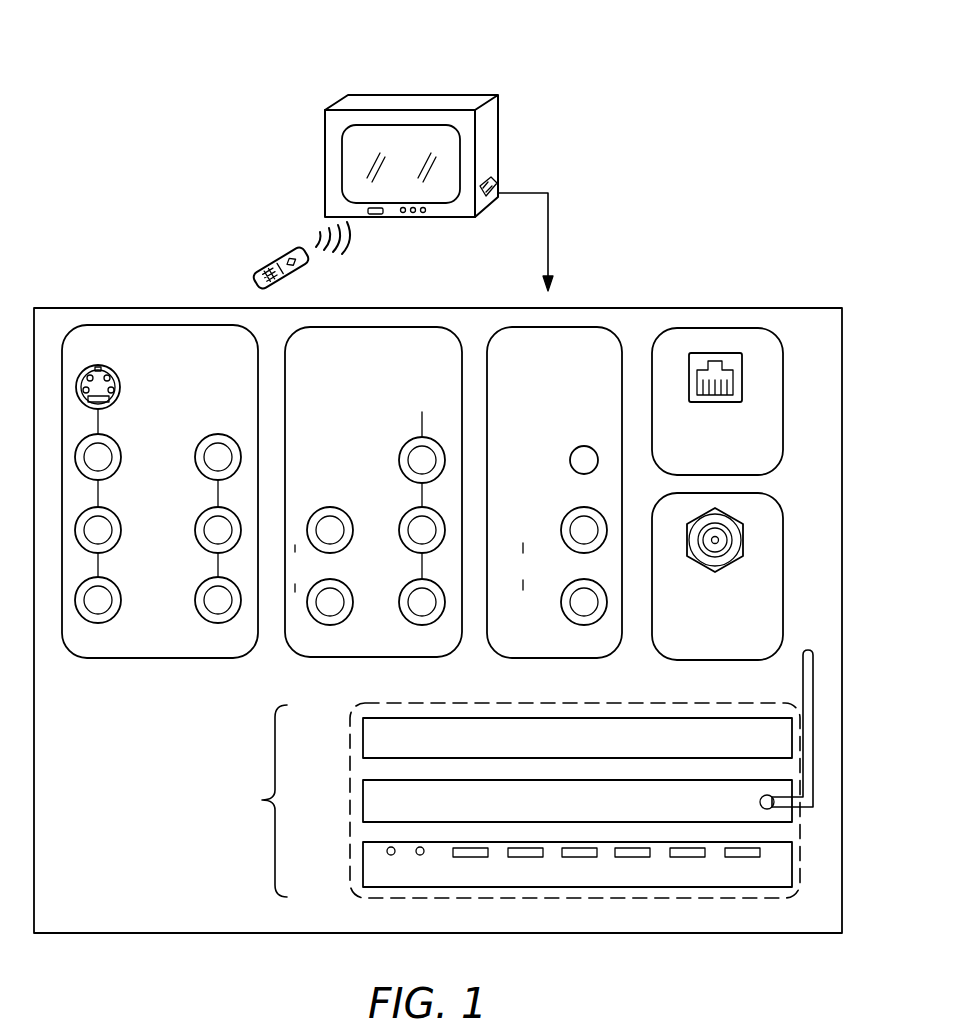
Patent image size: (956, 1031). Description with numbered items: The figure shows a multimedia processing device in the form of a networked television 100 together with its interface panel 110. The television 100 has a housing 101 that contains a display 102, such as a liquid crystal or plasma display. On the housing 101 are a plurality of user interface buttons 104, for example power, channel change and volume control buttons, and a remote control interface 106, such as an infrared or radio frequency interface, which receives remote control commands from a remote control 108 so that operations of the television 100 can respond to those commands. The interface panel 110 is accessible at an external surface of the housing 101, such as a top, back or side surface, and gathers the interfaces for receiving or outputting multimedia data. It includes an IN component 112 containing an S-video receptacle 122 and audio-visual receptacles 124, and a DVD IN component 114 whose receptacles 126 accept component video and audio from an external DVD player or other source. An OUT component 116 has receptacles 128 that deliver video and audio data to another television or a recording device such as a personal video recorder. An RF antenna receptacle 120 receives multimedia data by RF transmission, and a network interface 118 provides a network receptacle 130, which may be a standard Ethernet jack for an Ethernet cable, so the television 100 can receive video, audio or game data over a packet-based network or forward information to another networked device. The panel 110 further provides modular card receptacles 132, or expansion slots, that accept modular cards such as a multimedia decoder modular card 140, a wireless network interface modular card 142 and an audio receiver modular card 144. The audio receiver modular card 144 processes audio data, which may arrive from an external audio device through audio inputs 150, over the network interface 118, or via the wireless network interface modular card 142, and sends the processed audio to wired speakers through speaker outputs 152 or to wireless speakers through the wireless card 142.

The networked television 100 is at (568, 45).
The housing 101 is at (498, 112).
The display 102 is at (460, 141).
The user interface buttons 104 is at (428, 222).
The remote control interface 106 is at (376, 216).
The remote control 108 is at (283, 250).
The interface panel 110 is at (496, 186).
The IN component 112 is at (103, 658).
The DVD IN component 114 is at (318, 658).
The OUT component 116 is at (612, 655).
The network interface 118 is at (783, 402).
The RF antenna receptacle 120 is at (783, 578).
The S-video receptacle 122 is at (123, 387).
The audio-visual receptacles 124 is at (178, 435).
The receptacles 126 is at (371, 503).
The receptacles 128 is at (571, 421).
The network receptacle 130 is at (716, 354).
The modular card receptacles 132 is at (262, 800).
The multimedia decoder modular card 140 is at (363, 738).
The wireless network interface modular card 142 is at (363, 800).
The audio receiver modular card 144 is at (363, 858).
The audio inputs 150 is at (388, 848).
The speaker outputs 152 is at (785, 874).